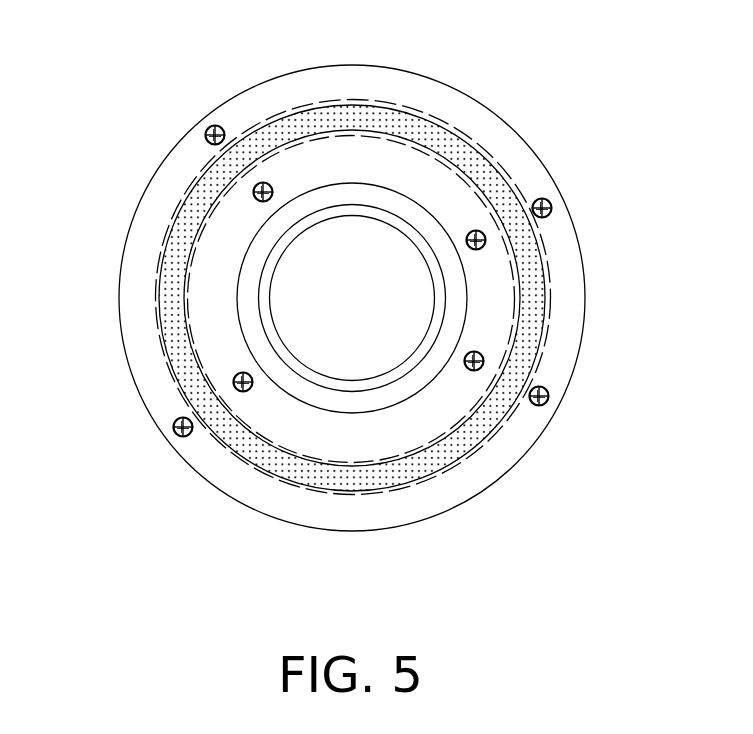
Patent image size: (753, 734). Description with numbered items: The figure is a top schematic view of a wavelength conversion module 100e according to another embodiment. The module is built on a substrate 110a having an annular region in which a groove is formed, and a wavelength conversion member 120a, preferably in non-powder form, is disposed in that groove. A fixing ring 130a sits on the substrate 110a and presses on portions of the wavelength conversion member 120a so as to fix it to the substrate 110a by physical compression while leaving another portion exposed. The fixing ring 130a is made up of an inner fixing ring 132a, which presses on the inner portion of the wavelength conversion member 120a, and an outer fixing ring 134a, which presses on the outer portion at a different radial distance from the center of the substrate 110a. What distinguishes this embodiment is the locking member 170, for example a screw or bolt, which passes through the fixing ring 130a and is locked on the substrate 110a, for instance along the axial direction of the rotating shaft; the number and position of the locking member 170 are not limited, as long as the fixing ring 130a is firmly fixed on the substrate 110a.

The wavelength conversion module 100e is at (672, 578).
The substrate 110a is at (573, 215).
The wavelength conversion member 120a is at (173, 342).
The fixing ring 130a is at (597, 73).
The inner fixing ring 132a is at (450, 188).
The outer fixing ring 134a is at (472, 125).
The locking member 170 is at (265, 182).